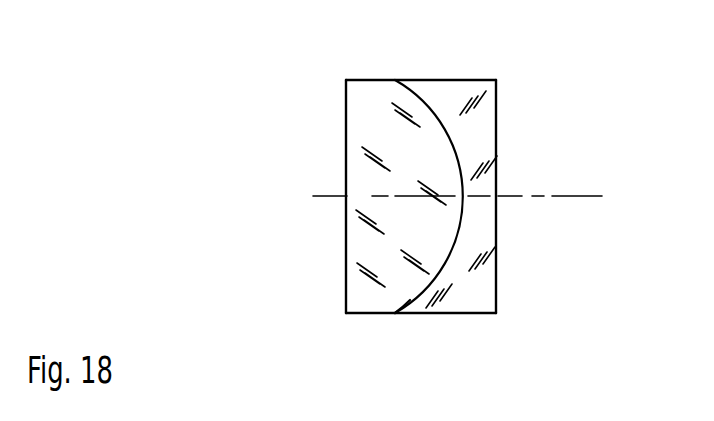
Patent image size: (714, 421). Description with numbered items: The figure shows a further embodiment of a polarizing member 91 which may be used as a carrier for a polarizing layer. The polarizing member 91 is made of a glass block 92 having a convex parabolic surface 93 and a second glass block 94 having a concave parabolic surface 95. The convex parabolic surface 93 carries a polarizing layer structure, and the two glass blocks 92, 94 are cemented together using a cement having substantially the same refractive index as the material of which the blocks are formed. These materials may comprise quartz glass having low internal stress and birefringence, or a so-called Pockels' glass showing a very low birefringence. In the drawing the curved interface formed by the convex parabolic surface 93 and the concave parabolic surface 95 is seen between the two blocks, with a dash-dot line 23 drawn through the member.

The polarizing member 91 is at (474, 313).
The glass block 92 is at (346, 277).
The convex parabolic surface 93 is at (421, 100).
The glass block 94 is at (496, 278).
The concave parabolic surface 95 is at (406, 304).
The optical axis 23 is at (586, 196).